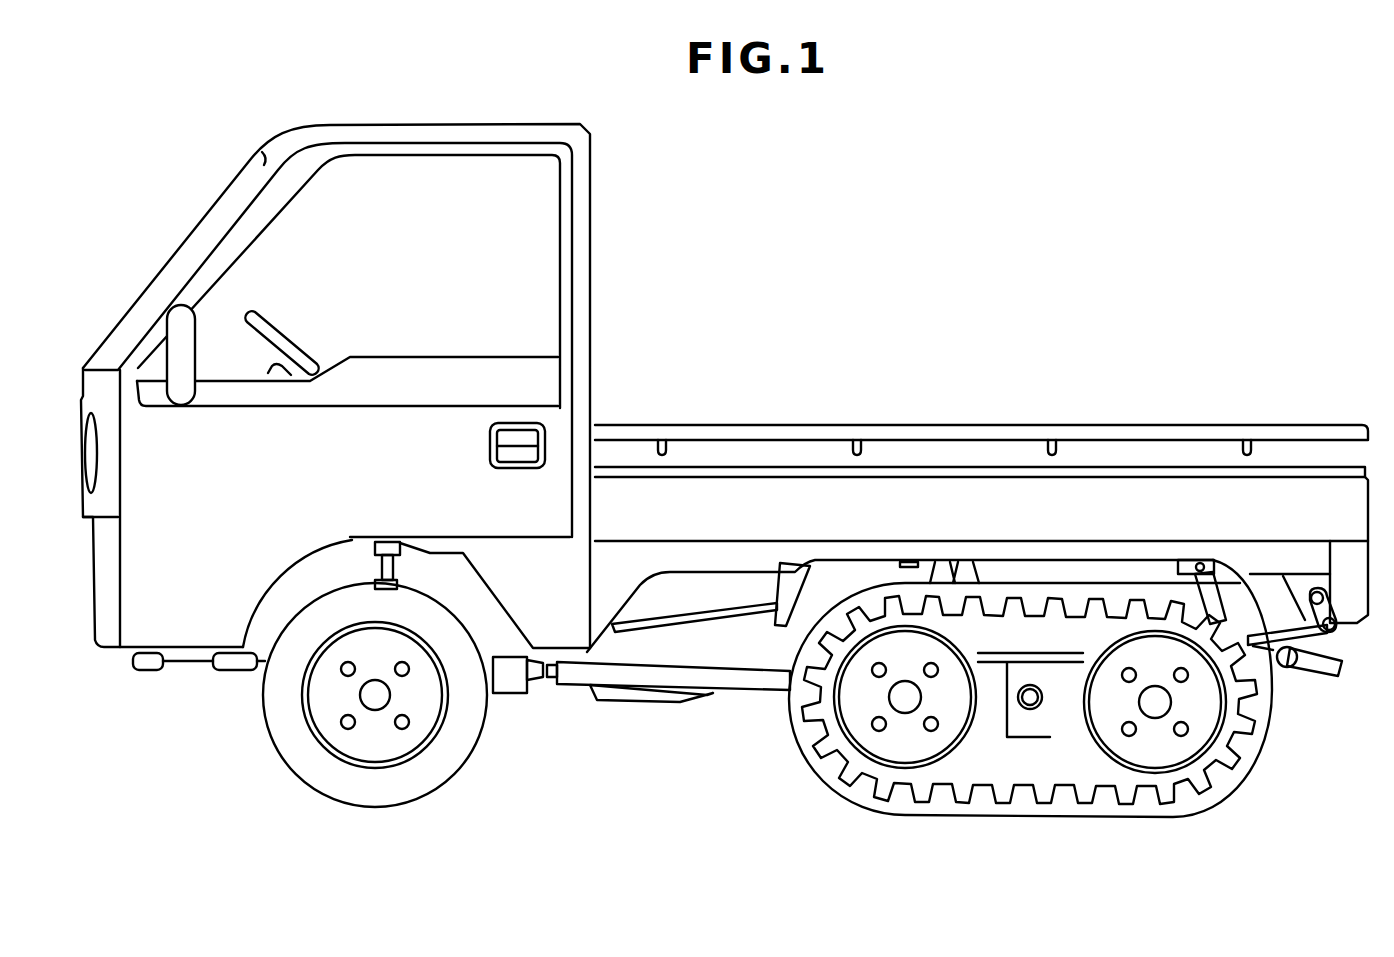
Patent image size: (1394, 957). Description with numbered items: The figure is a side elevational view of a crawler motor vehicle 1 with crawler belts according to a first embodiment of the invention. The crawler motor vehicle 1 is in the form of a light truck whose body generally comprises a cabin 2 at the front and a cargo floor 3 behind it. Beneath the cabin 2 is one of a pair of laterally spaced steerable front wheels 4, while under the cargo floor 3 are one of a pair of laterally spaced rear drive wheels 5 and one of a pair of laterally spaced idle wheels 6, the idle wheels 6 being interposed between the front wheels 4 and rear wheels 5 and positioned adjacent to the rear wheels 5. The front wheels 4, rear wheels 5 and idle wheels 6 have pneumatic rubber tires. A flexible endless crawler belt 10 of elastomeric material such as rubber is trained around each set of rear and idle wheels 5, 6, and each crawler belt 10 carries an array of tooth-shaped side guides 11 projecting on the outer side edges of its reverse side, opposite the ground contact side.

The crawler motor vehicle 1 is at (882, 226).
The cabin 2 is at (487, 127).
The cargo floor 3 is at (989, 426).
The steerable front wheels 4 is at (443, 757).
The rear drive wheels 5 is at (1197, 730).
The idle wheels 6 is at (887, 742).
The crawler belts 10 is at (961, 830).
The tooth-shaped side guides 11 is at (1030, 803).